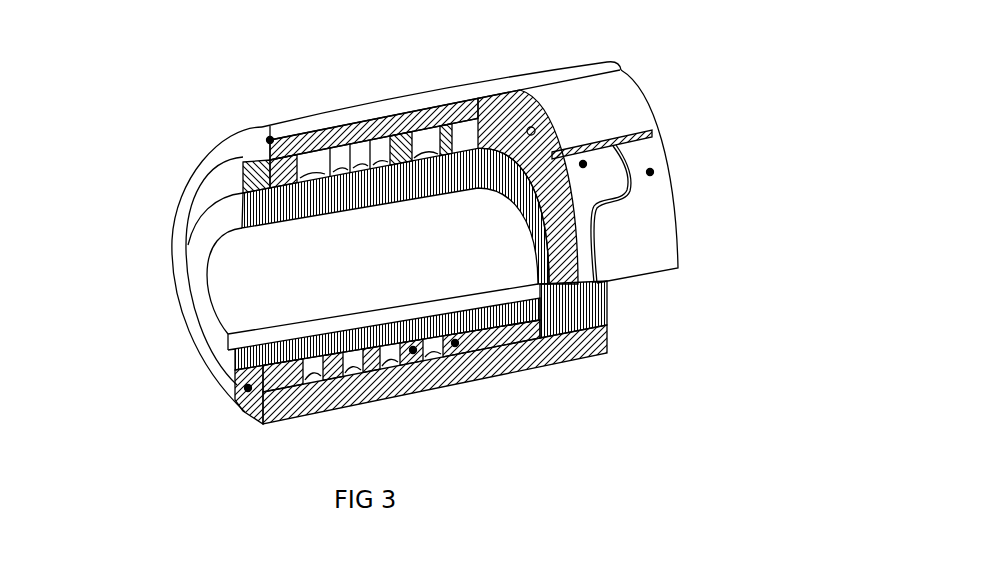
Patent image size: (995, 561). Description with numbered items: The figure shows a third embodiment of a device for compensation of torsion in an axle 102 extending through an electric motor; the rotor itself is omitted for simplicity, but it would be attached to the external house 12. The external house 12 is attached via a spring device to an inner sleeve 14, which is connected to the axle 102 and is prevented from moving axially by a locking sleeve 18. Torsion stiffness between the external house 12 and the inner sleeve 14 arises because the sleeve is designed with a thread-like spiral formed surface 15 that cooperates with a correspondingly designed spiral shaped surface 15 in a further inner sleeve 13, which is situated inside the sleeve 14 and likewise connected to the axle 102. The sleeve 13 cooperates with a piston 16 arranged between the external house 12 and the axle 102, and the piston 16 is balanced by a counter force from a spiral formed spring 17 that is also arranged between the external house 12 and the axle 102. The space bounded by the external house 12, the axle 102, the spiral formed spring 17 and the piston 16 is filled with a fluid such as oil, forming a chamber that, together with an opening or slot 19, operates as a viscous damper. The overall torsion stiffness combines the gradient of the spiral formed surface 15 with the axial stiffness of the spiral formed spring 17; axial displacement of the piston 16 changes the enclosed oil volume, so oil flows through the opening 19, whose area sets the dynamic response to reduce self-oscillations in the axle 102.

The external house 12 is at (390, 98).
The inner sleeve 13 is at (583, 164).
The inner sleeve 14 is at (650, 172).
The spiral formed surface 15 is at (599, 212).
The piston 16 is at (474, 110).
The spiral formed spring 17 is at (407, 133).
The locking sleeve 18 is at (248, 388).
The opening 19 is at (270, 140).
The axle 102 is at (197, 263).